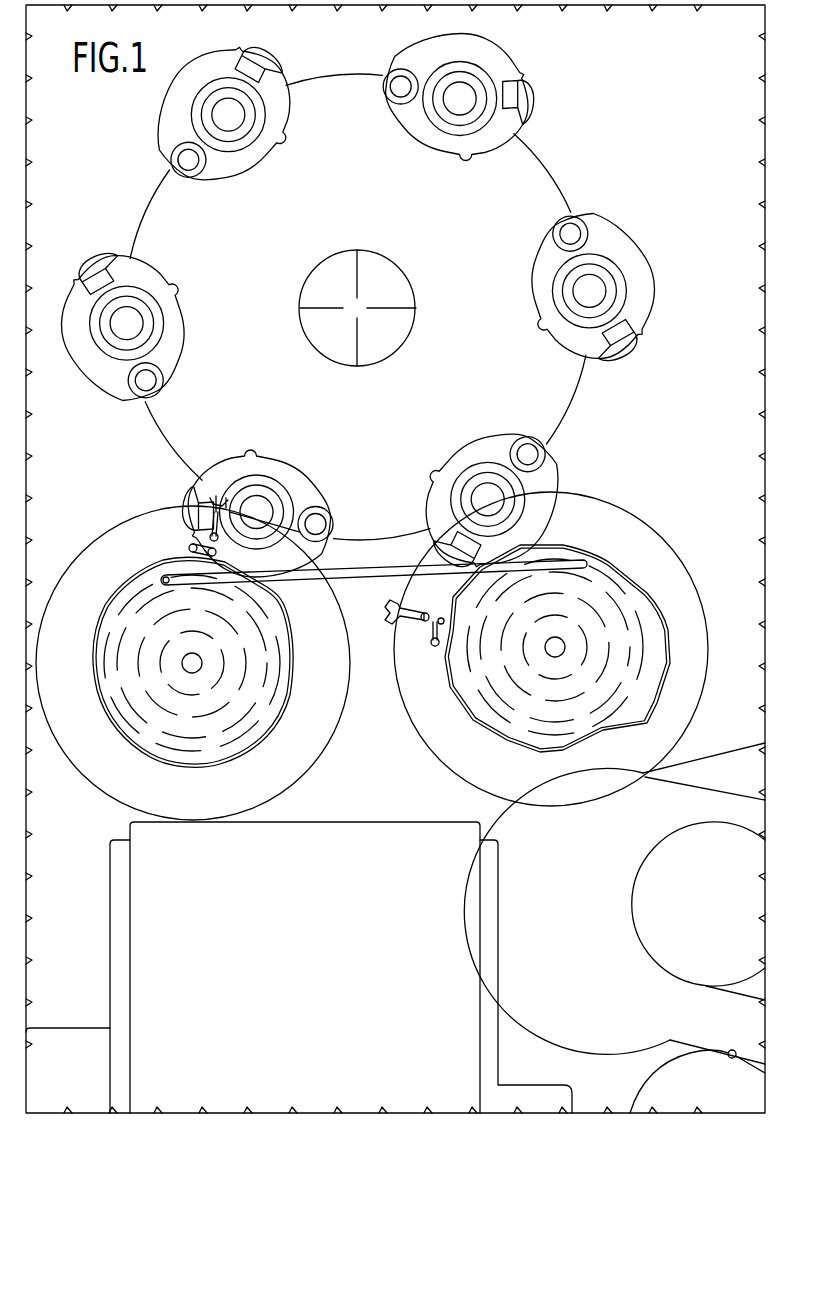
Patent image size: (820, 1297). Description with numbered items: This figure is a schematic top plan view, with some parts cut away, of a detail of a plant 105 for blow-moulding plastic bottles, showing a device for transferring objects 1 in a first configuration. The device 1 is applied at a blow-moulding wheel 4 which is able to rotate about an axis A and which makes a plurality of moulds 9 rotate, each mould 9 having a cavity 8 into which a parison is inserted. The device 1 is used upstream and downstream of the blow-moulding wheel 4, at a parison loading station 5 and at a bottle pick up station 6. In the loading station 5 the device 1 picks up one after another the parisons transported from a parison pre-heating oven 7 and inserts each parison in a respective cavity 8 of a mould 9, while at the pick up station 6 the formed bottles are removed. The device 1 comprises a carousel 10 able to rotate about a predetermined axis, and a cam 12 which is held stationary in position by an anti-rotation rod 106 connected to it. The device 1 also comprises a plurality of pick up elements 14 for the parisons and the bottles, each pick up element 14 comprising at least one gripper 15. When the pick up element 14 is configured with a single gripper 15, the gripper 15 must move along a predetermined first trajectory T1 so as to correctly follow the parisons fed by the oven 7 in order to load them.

The device for transferring objects 1 is at (640, 584).
The blow-moulding wheel 4 is at (527, 193).
The parison loading station 5 is at (697, 697).
The bottle pick up station 6 is at (145, 540).
The parison pre-heating oven 7 is at (597, 903).
The cavity 8 is at (125, 325).
The mould 9 is at (136, 282).
The carousel 10 is at (563, 650).
The cam 12 is at (298, 663).
The pick up element 14 is at (233, 519).
The gripper 15 is at (215, 507).
The plant 105 is at (660, 391).
The anti-rotation rod 106 is at (373, 564).
The axis A is at (358, 306).
The first trajectory T1 is at (97, 788).